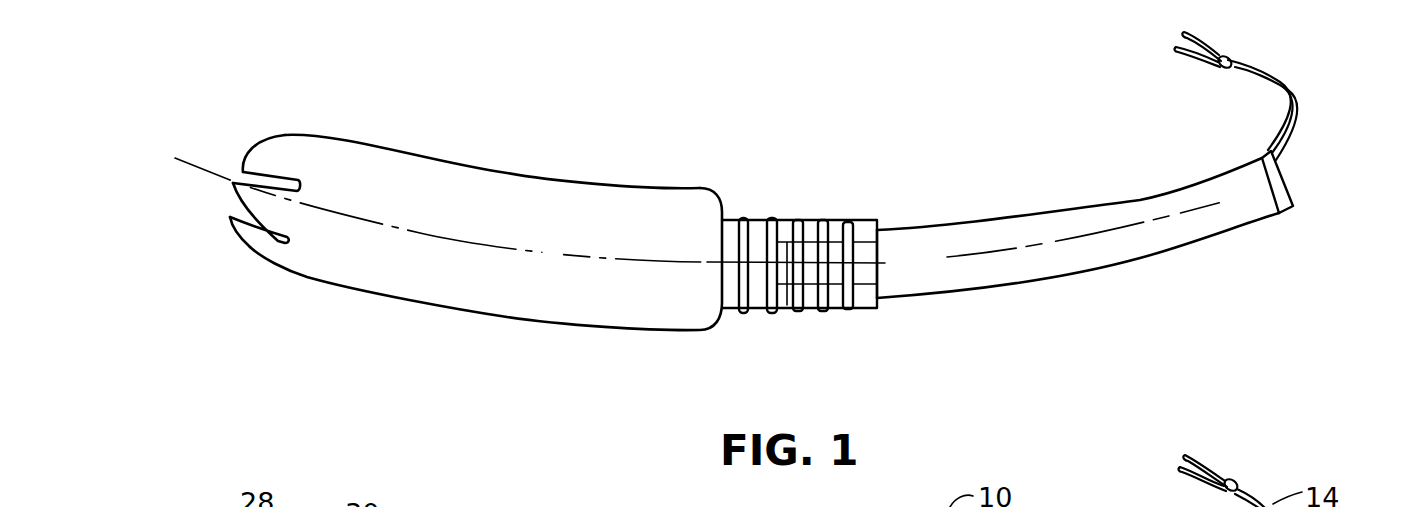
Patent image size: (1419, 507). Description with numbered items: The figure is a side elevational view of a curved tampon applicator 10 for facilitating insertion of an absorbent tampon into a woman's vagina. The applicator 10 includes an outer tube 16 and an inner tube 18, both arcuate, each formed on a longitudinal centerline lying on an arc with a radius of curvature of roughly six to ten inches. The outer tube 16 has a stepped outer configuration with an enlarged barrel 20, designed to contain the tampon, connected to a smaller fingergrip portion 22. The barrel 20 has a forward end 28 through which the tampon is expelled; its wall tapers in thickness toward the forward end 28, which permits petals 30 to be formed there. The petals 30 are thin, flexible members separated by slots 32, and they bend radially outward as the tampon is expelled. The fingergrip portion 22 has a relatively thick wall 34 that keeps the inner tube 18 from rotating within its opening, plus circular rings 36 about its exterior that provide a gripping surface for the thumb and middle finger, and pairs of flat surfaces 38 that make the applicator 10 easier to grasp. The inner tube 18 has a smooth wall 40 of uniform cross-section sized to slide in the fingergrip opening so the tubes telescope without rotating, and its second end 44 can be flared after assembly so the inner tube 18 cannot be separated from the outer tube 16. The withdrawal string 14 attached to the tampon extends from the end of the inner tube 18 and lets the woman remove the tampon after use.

The curved tampon applicator 10 is at (870, 78).
The withdrawal string 14 is at (1263, 83).
The outer tube 16 is at (449, 216).
The inner tube 18 is at (1078, 238).
The enlarged barrel 20 is at (507, 173).
The fingergrip portion 22 is at (805, 268).
The forward end 28 is at (276, 211).
The petals 30 is at (286, 146).
The slots 32 is at (290, 181).
The wall 34 is at (880, 304).
The circular rings 36 is at (757, 272).
The flat surfaces 38 is at (832, 311).
The wall 40 is at (1047, 278).
The second end 44 is at (1293, 204).